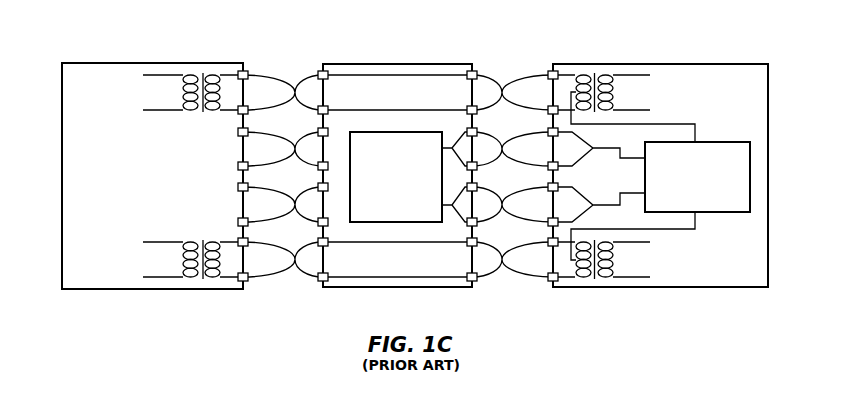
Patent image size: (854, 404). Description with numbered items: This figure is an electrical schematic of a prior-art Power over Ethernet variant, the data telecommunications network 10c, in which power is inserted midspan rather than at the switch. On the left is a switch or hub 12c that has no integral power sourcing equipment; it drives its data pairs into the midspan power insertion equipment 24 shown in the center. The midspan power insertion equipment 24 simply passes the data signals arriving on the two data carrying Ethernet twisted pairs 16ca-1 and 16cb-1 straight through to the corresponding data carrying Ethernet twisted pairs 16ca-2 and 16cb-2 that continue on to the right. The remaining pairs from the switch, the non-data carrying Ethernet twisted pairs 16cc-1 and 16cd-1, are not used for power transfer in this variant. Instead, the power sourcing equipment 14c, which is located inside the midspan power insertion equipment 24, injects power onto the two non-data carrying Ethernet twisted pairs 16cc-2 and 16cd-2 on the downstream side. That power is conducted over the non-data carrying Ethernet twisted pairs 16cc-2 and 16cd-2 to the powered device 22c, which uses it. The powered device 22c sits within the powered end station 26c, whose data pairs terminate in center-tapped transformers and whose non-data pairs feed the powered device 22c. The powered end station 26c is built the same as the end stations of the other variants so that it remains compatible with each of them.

The data telecommunications network 10c is at (504, 40).
The switch or hub 12c is at (218, 63).
The power sourcing equipment (PSE) 14c is at (396, 132).
The powered device (PD) 22c is at (768, 178).
The midspan power insertion equipment 24 is at (389, 101).
The powered end station 26c is at (768, 265).
The data carrying Ethernet twisted pair 16ca-1 is at (250, 73).
The non-data carrying Ethernet twisted pair 16cc-1 is at (250, 130).
The non-data carrying Ethernet twisted pair 16cd-1 is at (250, 185).
The data carrying Ethernet twisted pair 16cb-1 is at (250, 240).
The data carrying Ethernet twisted pair 16ca-2 is at (548, 73).
The non-data carrying Ethernet twisted pair 16cc-2 is at (548, 130).
The non-data carrying Ethernet twisted pair 16cd-2 is at (548, 185).
The data carrying Ethernet twisted pair 16cb-2 is at (548, 240).